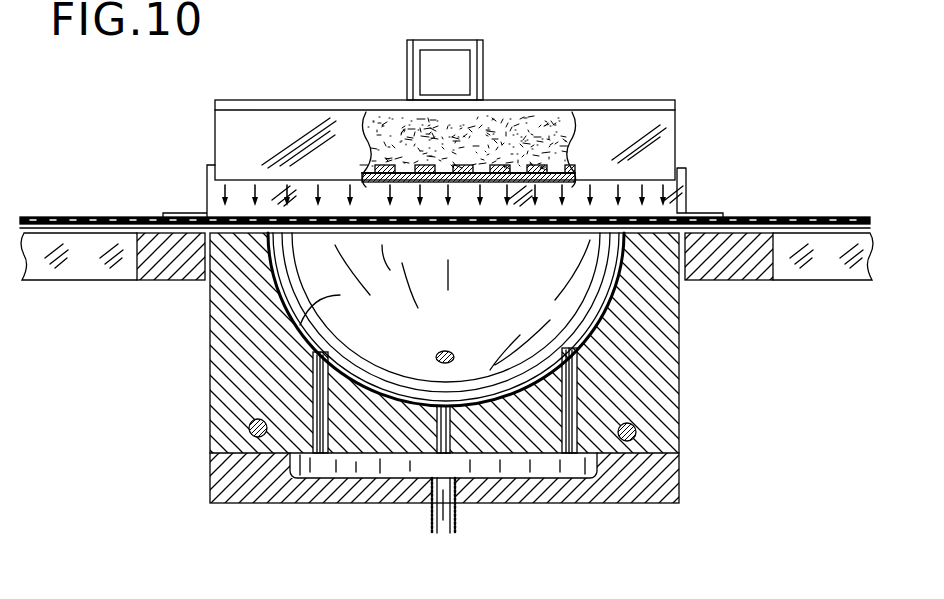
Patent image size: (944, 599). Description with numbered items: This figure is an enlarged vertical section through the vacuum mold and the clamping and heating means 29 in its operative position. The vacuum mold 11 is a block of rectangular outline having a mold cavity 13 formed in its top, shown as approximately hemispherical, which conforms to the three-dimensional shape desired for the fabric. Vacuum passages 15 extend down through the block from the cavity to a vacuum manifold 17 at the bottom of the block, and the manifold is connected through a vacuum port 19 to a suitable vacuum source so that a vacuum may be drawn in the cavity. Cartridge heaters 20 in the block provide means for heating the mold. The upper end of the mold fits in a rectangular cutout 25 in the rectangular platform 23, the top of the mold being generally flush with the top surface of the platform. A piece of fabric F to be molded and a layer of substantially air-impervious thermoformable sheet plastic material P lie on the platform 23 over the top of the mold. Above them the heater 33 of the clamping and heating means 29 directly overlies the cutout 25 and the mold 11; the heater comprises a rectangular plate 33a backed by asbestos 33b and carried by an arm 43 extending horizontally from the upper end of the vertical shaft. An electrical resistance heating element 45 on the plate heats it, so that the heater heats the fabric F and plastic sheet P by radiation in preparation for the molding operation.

The vacuum mold 11 is at (680, 375).
The mold cavity 13 is at (305, 333).
The vacuum passages 15 is at (325, 352).
The vacuum manifold 17 is at (520, 468).
The vacuum port 19 is at (430, 515).
The cartridge heaters 20 is at (250, 430).
The rectangular platform 23 is at (108, 182).
The rectangular cutout 25 is at (208, 265).
The clamping and heating means 29 is at (703, 86).
The heater 33 is at (676, 142).
The rectangular plate 33a is at (403, 183).
The asbestos 33b is at (388, 130).
The arm 43 is at (483, 63).
The electrical resistance heating element 45 is at (372, 165).
The sheet plastic material P is at (825, 180).
The fabric F is at (78, 282).